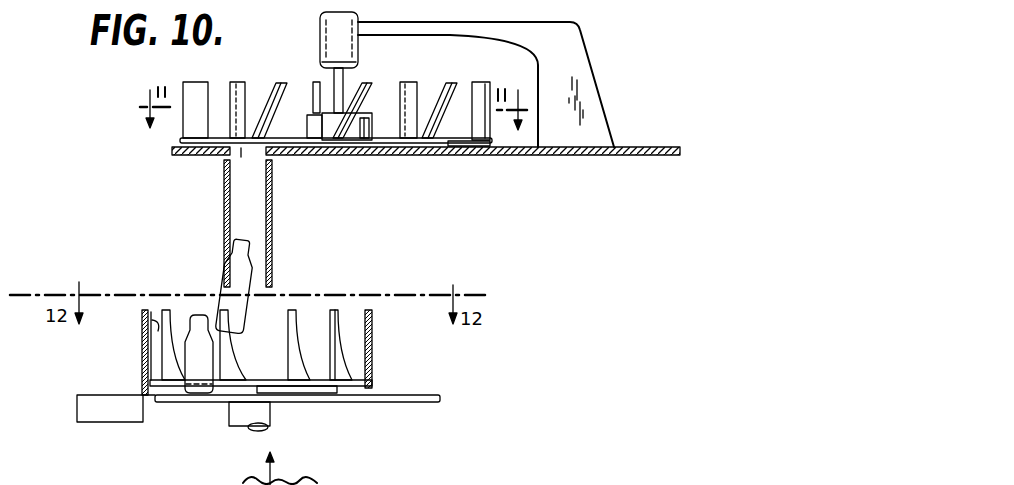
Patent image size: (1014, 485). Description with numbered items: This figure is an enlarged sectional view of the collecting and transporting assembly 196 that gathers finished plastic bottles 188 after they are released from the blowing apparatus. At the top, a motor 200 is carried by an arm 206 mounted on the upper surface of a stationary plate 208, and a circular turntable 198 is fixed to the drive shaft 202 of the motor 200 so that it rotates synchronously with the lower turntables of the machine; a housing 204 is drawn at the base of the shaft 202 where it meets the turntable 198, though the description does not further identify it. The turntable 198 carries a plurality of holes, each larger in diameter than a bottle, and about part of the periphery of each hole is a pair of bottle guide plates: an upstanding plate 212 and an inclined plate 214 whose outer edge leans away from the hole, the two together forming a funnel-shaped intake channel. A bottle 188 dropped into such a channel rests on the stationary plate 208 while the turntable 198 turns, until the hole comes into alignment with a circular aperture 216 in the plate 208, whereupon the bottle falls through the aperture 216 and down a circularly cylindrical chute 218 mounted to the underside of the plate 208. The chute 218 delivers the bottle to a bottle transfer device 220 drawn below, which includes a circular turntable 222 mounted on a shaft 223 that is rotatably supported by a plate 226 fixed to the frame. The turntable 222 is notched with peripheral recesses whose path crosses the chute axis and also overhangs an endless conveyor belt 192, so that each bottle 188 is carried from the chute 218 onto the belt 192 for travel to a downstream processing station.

The plastic bottle 188 is at (253, 305).
The endless belt 192 is at (82, 411).
The collecting and transporting assembly 196 is at (140, 137).
The circular turntable 198 is at (448, 142).
The motor 200 is at (327, 32).
The drive shaft 202 is at (340, 84).
The gear housing 204 is at (372, 127).
The arm 206 is at (572, 38).
The stationary plate 208 is at (650, 147).
The upstanding bottle guide plate 212 is at (235, 81).
The inclined bottle guide plate 214 is at (286, 83).
The circular aperture 216 is at (241, 157).
The circularly cylindrical chute 218 is at (273, 201).
The bottle transfer device 220 is at (188, 419).
The circular turntable 222 is at (325, 387).
The shaft 223 is at (232, 416).
The plate 226 is at (402, 400).